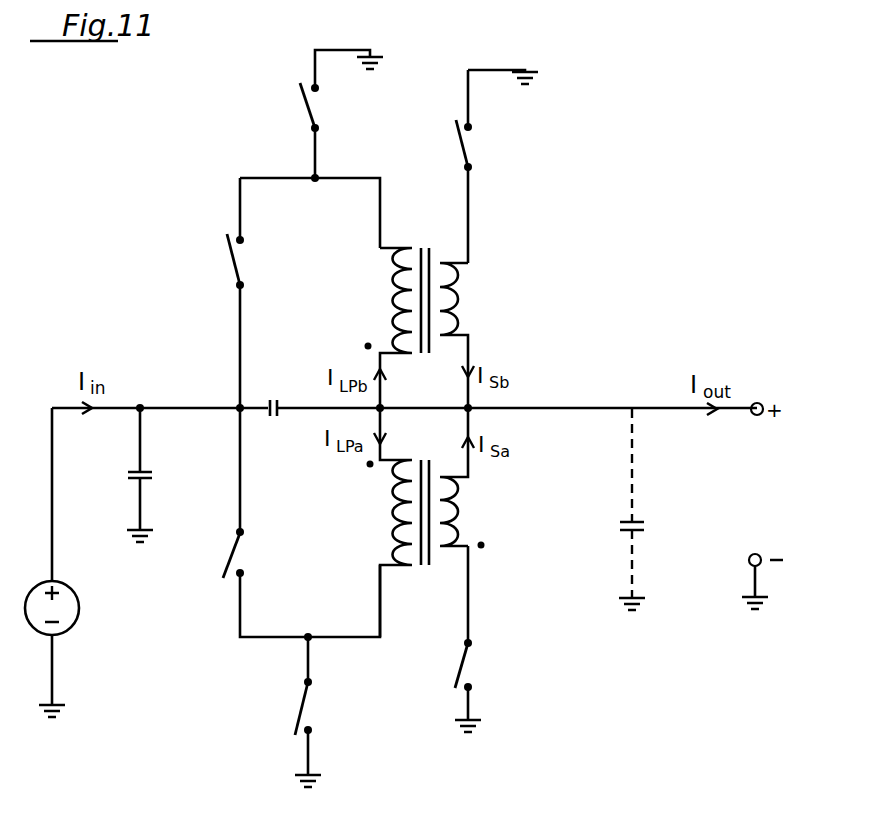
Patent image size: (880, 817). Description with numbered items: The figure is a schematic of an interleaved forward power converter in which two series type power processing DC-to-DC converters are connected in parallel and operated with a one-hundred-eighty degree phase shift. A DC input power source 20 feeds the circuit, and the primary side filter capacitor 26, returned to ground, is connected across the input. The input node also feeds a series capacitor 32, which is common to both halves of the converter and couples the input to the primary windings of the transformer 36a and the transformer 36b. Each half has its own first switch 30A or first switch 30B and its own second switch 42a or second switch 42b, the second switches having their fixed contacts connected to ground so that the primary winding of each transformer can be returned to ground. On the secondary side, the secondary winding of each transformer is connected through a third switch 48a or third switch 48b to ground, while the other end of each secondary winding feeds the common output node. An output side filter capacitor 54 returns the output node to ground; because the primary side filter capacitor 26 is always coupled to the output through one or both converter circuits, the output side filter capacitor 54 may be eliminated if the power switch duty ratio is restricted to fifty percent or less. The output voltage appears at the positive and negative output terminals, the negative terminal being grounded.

The DC input power source 20 is at (69, 585).
The primary side filter capacitor 26 is at (128, 470).
The series capacitor 32 is at (269, 399).
The first switch 30A is at (228, 262).
The first switch 30B is at (229, 547).
The second switch 42a is at (303, 109).
The second switch 42b is at (296, 712).
The third switch 48a is at (458, 139).
The third switch 48b is at (455, 672).
The transformer 36a is at (443, 233).
The transformer 36b is at (440, 600).
The output side filter capacitor 54 is at (641, 521).